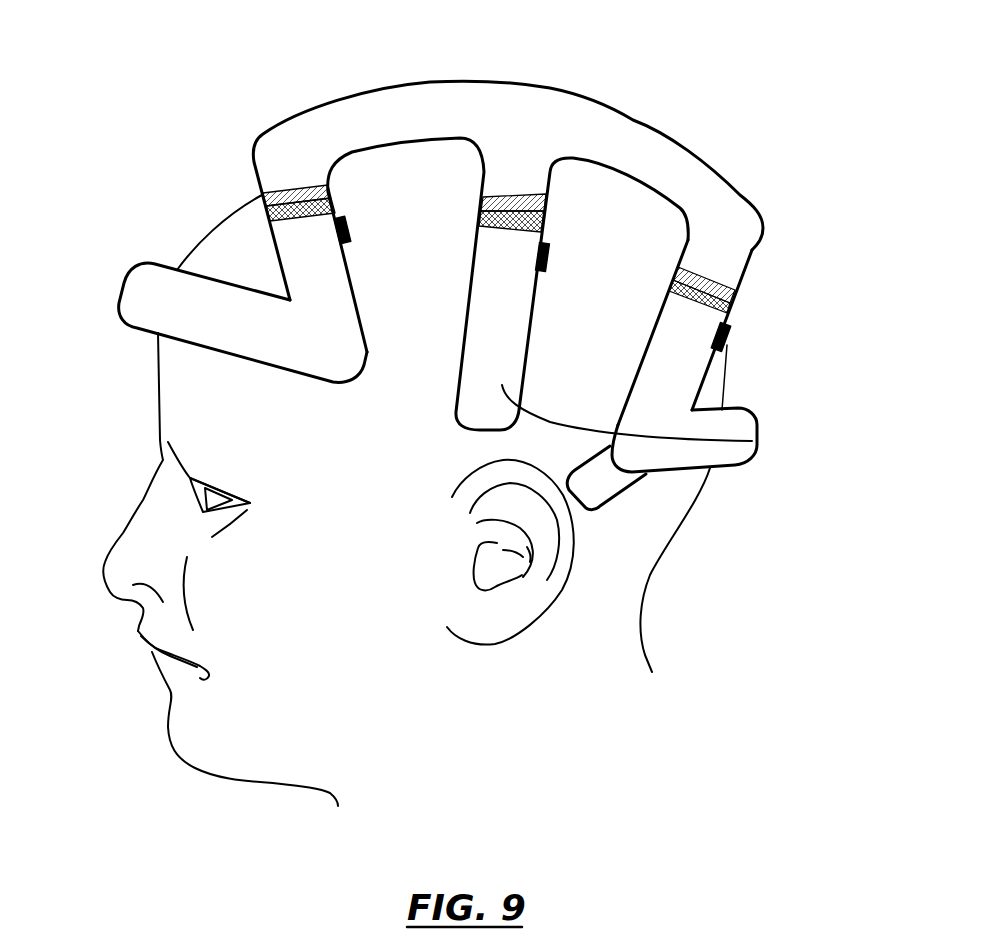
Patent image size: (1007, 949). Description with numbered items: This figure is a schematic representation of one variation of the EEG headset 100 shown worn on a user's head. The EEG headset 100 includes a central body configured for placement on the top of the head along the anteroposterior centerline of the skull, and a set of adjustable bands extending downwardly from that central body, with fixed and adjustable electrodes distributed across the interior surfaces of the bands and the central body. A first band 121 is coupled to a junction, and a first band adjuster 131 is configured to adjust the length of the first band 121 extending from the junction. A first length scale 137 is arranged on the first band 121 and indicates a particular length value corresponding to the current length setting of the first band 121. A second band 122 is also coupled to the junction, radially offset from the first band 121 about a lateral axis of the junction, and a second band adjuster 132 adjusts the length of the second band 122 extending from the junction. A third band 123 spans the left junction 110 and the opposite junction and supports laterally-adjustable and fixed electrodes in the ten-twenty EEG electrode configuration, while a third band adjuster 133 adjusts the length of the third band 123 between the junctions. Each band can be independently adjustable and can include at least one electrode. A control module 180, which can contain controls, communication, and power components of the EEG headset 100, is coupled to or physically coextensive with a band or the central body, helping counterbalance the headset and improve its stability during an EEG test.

The EEG headset 100 is at (778, 41).
The left junction 110 is at (460, 81).
The control module 180 is at (553, 115).
The first band 121 is at (283, 345).
The second band 122 is at (752, 441).
The third band 123 is at (670, 380).
The first band adjuster 131 is at (348, 230).
The second band adjuster 132 is at (549, 256).
The third band adjuster 133 is at (731, 333).
The first length scale 137 is at (254, 210).